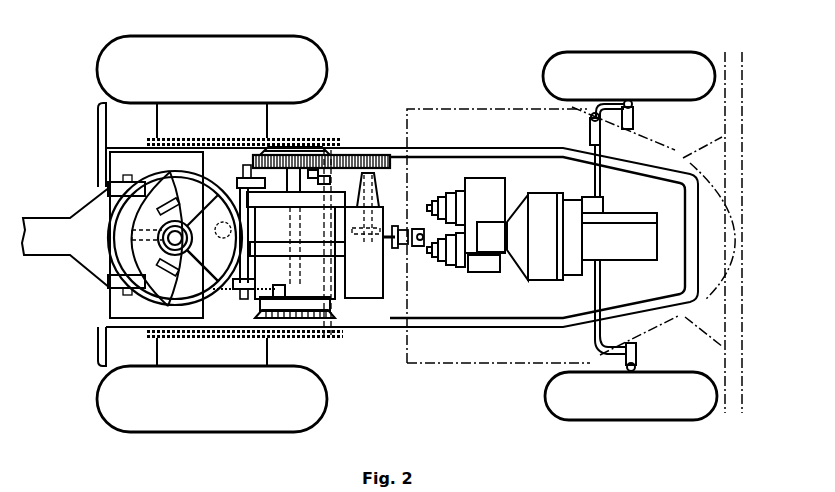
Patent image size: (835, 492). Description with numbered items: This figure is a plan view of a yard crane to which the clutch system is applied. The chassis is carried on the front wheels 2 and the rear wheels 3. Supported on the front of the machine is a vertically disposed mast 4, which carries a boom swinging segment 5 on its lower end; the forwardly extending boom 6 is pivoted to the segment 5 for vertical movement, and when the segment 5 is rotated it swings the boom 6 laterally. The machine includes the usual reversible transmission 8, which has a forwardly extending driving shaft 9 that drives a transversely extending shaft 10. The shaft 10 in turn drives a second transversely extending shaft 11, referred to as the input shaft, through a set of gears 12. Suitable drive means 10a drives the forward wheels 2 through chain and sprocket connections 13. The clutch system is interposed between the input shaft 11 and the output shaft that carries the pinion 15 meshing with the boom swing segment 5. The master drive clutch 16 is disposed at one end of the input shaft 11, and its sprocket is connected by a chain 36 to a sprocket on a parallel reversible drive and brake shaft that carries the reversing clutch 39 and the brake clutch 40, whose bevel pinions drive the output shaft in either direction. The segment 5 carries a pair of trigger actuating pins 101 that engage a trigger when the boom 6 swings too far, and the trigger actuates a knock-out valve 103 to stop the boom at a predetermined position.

The front wheels 2 is at (327, 62).
The rear wheels 3 is at (546, 75).
The mast 4 is at (153, 229).
The boom swinging segment 5 is at (178, 176).
The boom 6 is at (52, 238).
The reversible transmission 8 is at (471, 273).
The driving shaft 9 is at (398, 229).
The transversely extending shaft 10 is at (380, 182).
The drive means 10a is at (330, 262).
The second transversely extending shaft 11 is at (288, 229).
The set of gears 12 is at (347, 155).
The chain and sprocket connections 13 is at (310, 140).
The pinion 15 is at (192, 233).
The master drive clutch 16 is at (318, 300).
The chain 36 is at (276, 300).
The reversing clutch 39 is at (248, 286).
The brake clutch 40 is at (236, 184).
The trigger actuating pins 101 is at (177, 205).
The knock-out valve 103 is at (131, 238).